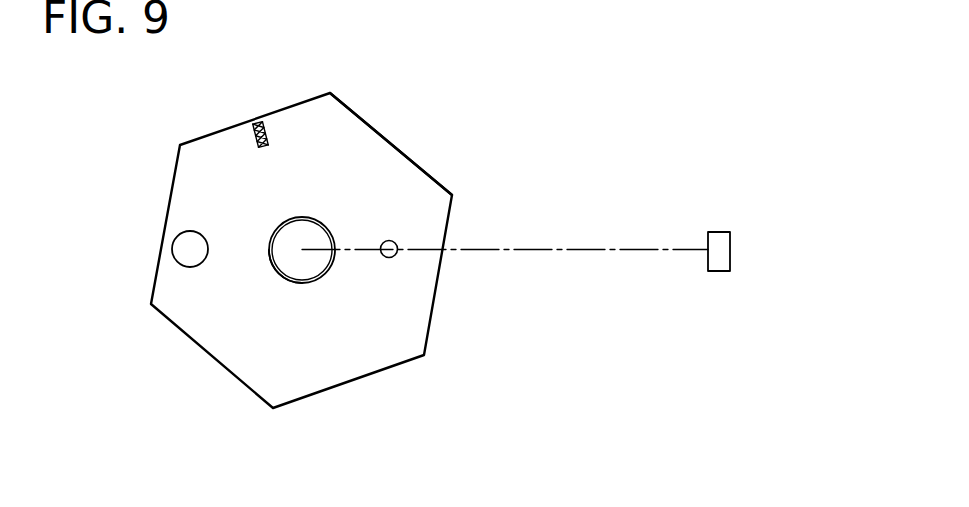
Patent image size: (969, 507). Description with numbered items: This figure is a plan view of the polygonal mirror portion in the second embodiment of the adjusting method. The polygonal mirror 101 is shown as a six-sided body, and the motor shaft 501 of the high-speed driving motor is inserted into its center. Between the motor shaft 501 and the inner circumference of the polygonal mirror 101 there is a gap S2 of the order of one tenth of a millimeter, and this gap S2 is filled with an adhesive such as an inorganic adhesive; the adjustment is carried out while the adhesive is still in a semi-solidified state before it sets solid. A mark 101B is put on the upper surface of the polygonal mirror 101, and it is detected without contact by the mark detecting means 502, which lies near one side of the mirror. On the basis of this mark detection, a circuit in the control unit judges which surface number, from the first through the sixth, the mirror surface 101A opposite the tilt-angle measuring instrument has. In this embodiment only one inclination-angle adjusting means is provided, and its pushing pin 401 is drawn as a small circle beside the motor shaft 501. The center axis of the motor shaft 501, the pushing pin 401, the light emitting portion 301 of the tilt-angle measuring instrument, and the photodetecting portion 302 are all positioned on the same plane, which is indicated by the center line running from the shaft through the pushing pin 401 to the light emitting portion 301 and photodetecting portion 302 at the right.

The polygonal mirror 101 is at (368, 134).
The mirror surface 101A is at (428, 170).
The mark 101B is at (256, 123).
The mark detecting means 502 is at (176, 262).
The motor shaft 501 is at (278, 256).
The gap S2 is at (287, 278).
The pushing pin 401 is at (397, 256).
The light emitting portion 301 is at (707, 284).
The photodetecting portion 302 is at (713, 272).